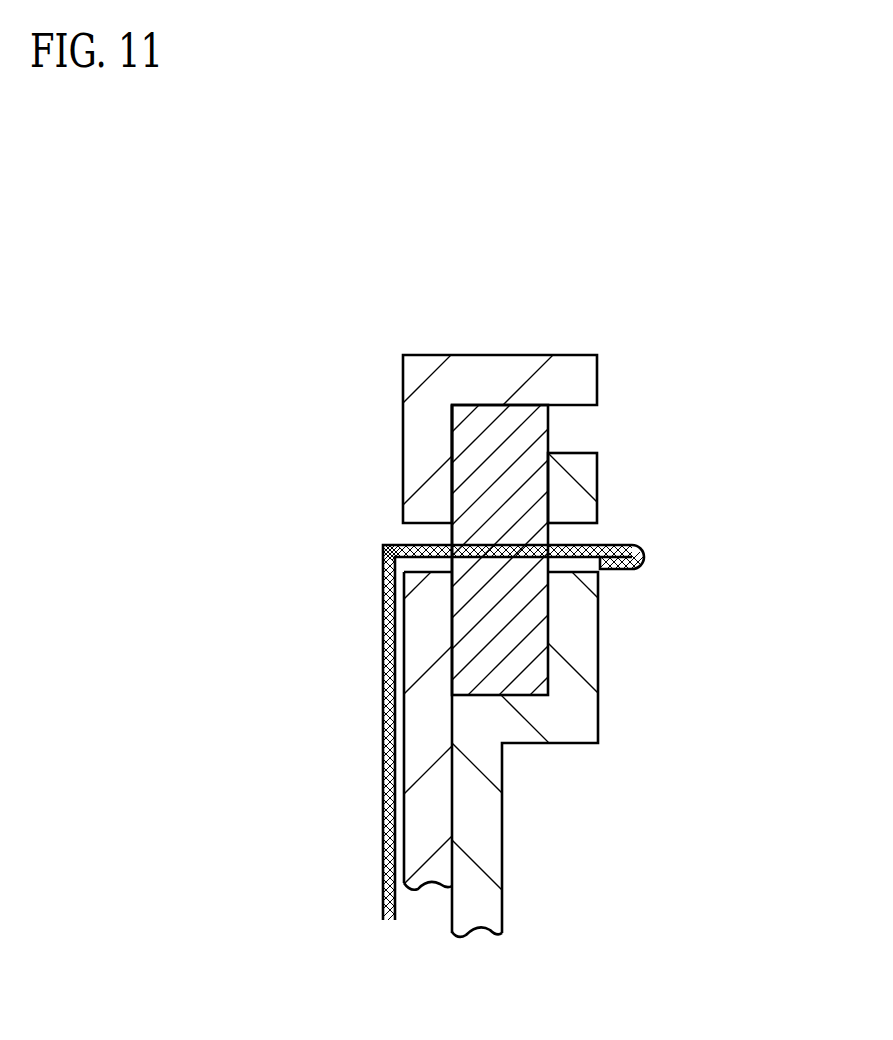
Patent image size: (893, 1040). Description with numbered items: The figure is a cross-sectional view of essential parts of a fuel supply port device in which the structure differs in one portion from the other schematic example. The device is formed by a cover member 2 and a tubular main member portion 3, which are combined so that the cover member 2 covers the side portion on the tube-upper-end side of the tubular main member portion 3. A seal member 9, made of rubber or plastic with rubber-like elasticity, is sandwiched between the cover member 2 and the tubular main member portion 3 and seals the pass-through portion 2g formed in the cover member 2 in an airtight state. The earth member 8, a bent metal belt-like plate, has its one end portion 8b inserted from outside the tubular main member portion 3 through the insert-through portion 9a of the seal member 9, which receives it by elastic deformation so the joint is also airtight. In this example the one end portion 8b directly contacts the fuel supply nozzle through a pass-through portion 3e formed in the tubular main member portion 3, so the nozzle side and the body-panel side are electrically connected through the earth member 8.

The cover member 2 is at (418, 357).
The pass-through portion 2g is at (423, 535).
The tubular main member portion 3 is at (503, 857).
The pass-through portion 3e is at (580, 536).
The earth member 8 is at (387, 808).
The one end portion 8b is at (640, 557).
The seal member 9 is at (482, 425).
The insert-through portion 9a is at (513, 543).